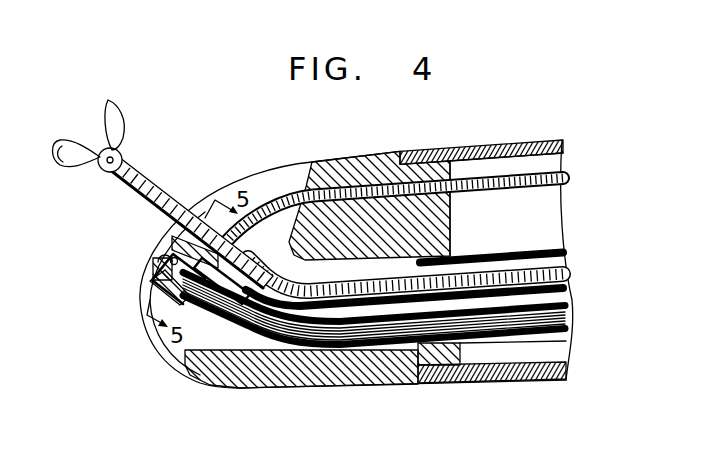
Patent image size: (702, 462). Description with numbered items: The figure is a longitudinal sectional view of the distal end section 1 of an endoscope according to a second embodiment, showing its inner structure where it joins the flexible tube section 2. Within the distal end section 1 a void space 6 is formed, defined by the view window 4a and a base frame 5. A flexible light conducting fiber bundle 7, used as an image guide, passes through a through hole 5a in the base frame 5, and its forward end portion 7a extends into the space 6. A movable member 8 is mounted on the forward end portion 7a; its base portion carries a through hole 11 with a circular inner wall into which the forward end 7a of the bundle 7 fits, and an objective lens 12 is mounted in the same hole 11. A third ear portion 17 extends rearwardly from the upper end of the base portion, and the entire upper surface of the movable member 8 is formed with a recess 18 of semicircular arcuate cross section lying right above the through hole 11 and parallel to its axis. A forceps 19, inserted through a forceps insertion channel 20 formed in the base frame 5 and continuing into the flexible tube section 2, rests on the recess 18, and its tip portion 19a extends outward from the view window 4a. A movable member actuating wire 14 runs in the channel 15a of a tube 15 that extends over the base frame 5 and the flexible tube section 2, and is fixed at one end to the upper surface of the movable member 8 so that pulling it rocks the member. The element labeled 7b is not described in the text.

The distal end section 1 is at (353, 156).
The flexible tube section 2 is at (498, 142).
The view window 4a is at (252, 173).
The base frame 5 is at (376, 174).
The through hole 5a is at (465, 337).
The void space 6 is at (185, 353).
The fiber bundle 7 is at (403, 343).
The forward end portion 7a is at (212, 318).
The holder frame 7b is at (177, 296).
The movable member 8 is at (163, 276).
The through hole 11 is at (165, 238).
The objective lens 12 is at (170, 258).
The movable member actuating wire 14 is at (280, 192).
The tube 15 is at (550, 190).
The channel 15a is at (497, 190).
The third ear portion 17 is at (250, 265).
The recess 18 is at (274, 263).
The forceps 19 is at (350, 277).
The tip portion 19a is at (62, 167).
The forceps insertion channel 20 is at (382, 268).